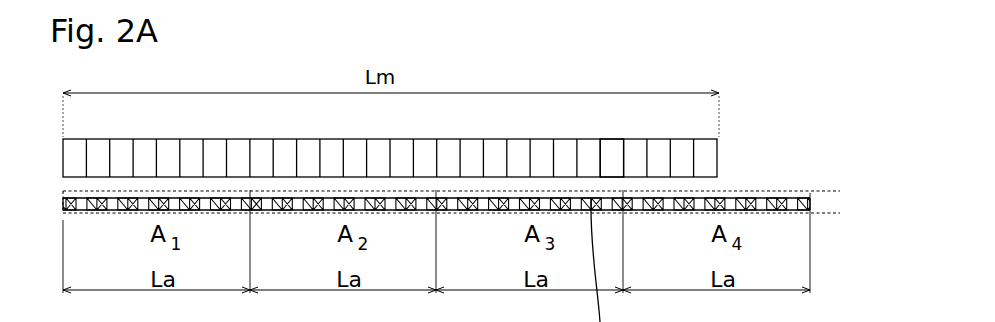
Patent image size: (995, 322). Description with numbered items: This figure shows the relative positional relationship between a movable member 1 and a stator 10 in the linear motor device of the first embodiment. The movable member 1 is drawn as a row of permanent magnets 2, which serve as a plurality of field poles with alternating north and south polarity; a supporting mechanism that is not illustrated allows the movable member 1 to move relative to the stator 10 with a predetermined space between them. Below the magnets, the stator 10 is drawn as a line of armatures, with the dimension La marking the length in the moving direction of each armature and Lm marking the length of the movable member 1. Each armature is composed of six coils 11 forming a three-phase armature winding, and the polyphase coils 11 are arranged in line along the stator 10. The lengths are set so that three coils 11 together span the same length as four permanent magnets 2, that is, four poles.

The movable member 1 is at (172, 136).
The permanent magnet 2 is at (604, 140).
The stator 10 is at (759, 187).
The coil 11 is at (287, 197).